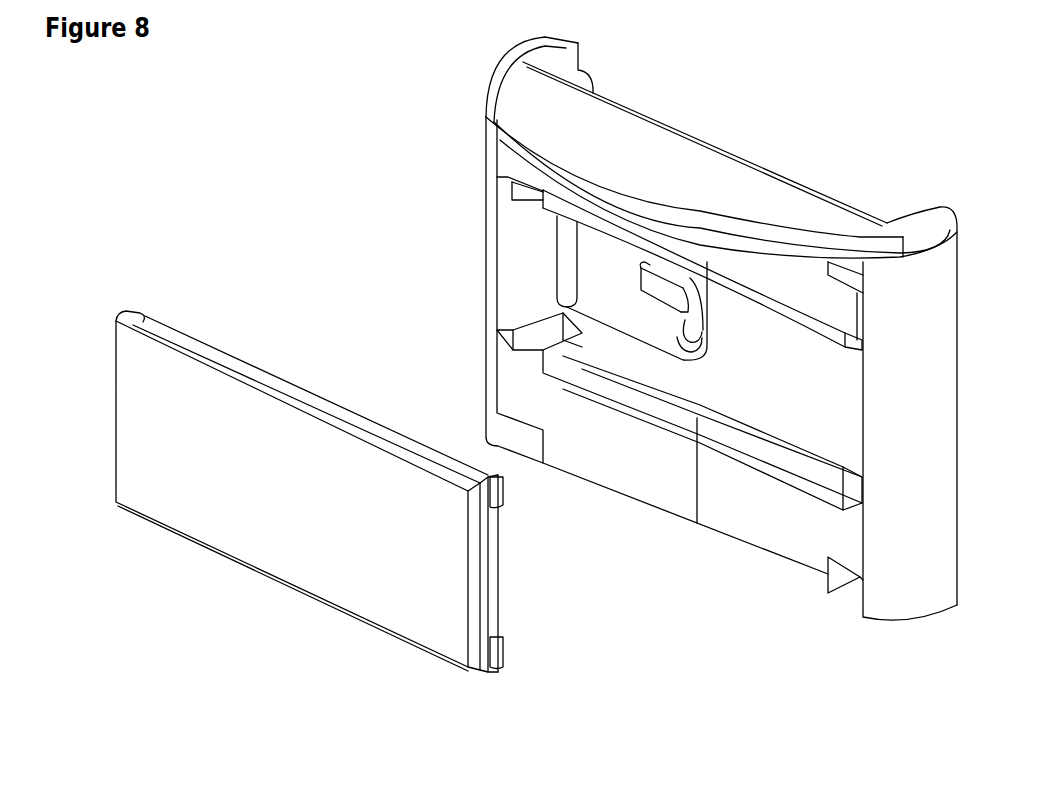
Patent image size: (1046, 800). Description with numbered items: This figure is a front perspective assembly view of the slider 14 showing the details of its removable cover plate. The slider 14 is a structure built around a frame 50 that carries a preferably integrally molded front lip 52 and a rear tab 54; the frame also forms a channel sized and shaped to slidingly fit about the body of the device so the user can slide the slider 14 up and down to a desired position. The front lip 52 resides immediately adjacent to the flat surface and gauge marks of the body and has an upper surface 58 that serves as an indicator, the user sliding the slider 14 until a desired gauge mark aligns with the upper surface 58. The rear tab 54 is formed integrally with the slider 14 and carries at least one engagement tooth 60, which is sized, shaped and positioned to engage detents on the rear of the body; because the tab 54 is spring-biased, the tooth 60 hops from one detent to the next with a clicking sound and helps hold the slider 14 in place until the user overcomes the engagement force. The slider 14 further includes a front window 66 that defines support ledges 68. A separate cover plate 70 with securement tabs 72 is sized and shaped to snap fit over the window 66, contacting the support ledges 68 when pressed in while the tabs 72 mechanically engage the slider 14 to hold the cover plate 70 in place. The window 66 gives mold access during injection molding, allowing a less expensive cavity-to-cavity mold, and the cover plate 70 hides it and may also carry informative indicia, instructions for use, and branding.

The slider 14 is at (345, 130).
The frame 50 is at (805, 568).
The front lip 52 is at (485, 79).
The rear tab 54 is at (690, 347).
The upper surface 58 is at (755, 200).
The engagement tooth 60 is at (665, 300).
The front window 66 is at (800, 418).
The support ledges 68 is at (555, 207).
The cover plate 70 is at (260, 550).
The securement tabs 72 is at (493, 500).